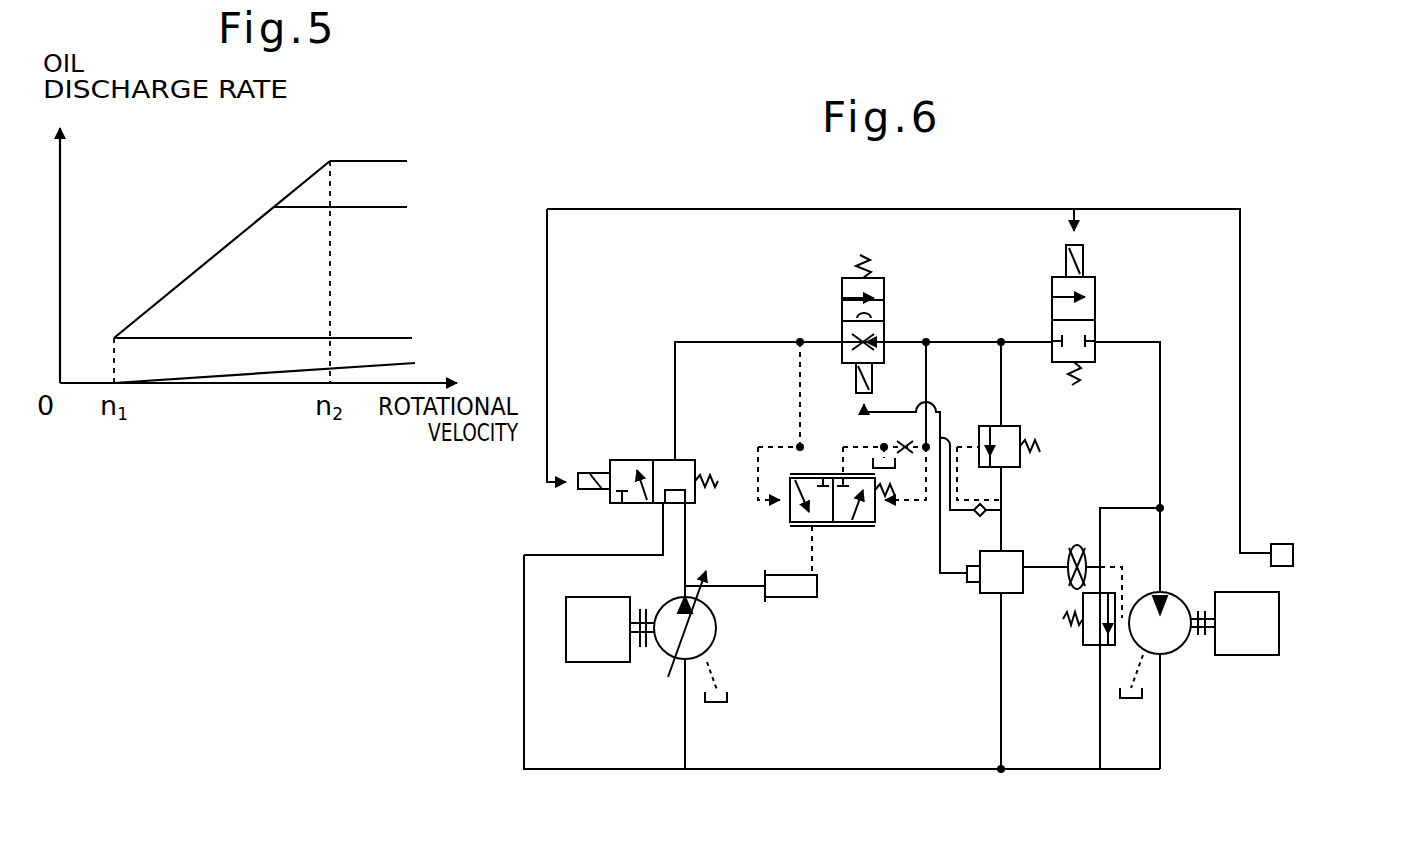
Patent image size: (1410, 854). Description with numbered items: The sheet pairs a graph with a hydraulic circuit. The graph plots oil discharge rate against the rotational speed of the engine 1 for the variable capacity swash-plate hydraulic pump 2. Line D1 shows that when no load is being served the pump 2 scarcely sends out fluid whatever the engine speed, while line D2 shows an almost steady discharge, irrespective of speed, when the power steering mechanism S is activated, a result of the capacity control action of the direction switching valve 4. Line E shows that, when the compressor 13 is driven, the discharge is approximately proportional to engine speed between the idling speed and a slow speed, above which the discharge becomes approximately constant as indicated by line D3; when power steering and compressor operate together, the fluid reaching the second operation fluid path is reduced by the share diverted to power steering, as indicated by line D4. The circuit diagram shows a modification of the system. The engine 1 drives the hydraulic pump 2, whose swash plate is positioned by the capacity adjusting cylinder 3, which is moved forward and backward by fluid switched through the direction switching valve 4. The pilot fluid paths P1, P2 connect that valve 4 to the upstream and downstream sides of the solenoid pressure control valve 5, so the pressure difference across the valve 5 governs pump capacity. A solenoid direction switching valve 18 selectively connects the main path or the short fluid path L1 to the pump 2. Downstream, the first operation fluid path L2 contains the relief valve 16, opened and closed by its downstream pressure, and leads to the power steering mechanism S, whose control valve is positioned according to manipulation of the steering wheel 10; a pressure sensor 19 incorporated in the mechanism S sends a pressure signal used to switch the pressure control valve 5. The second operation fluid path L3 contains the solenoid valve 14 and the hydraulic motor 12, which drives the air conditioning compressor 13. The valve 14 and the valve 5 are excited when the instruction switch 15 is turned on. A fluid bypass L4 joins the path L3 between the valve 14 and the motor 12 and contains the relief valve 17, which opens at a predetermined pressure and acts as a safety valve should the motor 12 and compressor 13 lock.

In FIG. 6, the engine 1 is at (566, 655).
In FIG. 6, the hydraulic pump 2 is at (712, 632).
In FIG. 6, the cylinder 3 is at (782, 597).
In FIG. 6, the direction switching valve 4 is at (875, 512).
In FIG. 6, the pressure control valve 5 is at (884, 303).
In FIG. 6, the steering wheel 10 is at (1068, 550).
In FIG. 6, the hydraulic motor 12 is at (1172, 650).
In FIG. 6, the air conditioning compressor 13 is at (1248, 655).
In FIG. 6, the solenoid valve 14 is at (1095, 300).
In FIG. 6, the instruction switch 15 is at (1279, 544).
In FIG. 6, the relief valve 16 is at (1020, 460).
In FIG. 6, the relief valve 17 is at (1083, 633).
In FIG. 6, the solenoid direction switching valve 18 is at (666, 460).
In FIG. 6, the pressure sensor 19 is at (967, 584).
In FIG. 6, the power steering mechanism S is at (988, 593).
In FIG. 6, the short fluid path L1 is at (524, 600).
In FIG. 6, the first operation fluid path L2 is at (1001, 378).
In FIG. 6, the second operation fluid path L3 is at (1160, 433).
In FIG. 6, the fluid bypass L4 is at (1100, 728).
In FIG. 6, the pilot fluid path P1 is at (798, 382).
In FIG. 6, the pilot fluid path P2 is at (926, 372).
In FIG. 5, the line E is at (222, 235).
In FIG. 5, the line D1 is at (390, 365).
In FIG. 5, the line D2 is at (380, 338).
In FIG. 5, the line D3 is at (405, 161).
In FIG. 5, the line D4 is at (390, 183).